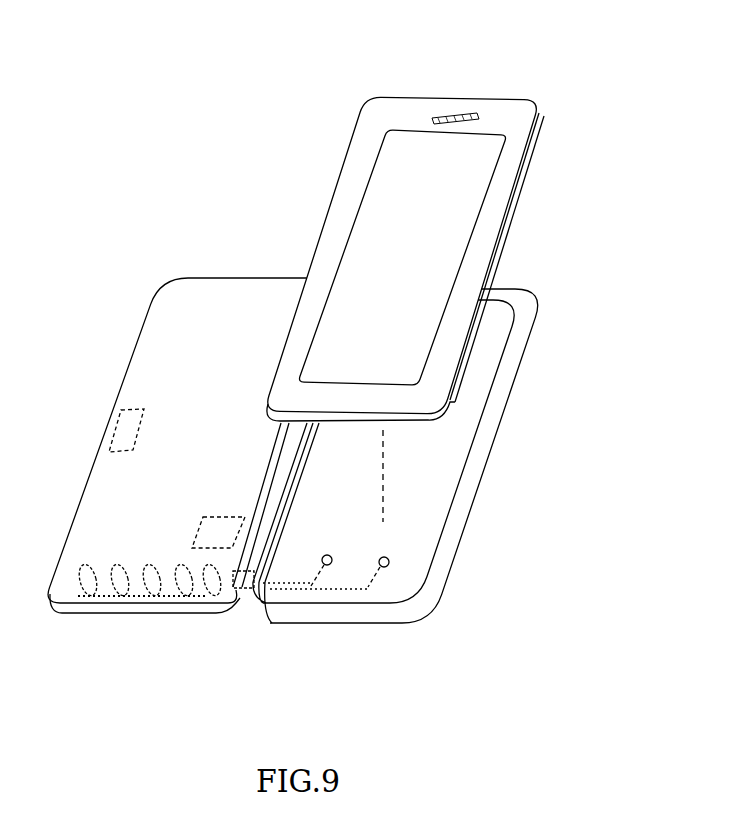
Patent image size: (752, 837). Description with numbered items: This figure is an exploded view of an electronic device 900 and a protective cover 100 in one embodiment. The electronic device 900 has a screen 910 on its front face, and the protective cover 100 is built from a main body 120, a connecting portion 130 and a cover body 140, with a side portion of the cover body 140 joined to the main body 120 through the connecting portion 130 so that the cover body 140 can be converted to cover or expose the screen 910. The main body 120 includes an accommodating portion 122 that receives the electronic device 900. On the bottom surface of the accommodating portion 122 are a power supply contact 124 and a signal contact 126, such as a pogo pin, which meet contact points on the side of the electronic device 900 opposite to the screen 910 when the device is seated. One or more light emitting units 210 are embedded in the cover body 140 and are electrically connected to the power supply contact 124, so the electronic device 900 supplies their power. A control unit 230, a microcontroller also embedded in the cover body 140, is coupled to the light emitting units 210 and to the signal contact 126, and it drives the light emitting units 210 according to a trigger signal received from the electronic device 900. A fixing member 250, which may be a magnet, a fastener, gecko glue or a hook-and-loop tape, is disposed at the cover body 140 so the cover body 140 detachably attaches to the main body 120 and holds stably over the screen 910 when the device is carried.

The protective cover 100 is at (176, 128).
The electronic device 900 is at (513, 103).
The screen 910 is at (398, 157).
The cover body 140 is at (205, 290).
The fixing member 250 is at (128, 406).
The light emitting unit 210 is at (92, 560).
The control unit 230 is at (222, 514).
The connecting portion 130 is at (243, 590).
The main body 120 is at (383, 617).
The accommodating portion 122 is at (421, 468).
The power supply contact 124 is at (333, 559).
The signal contact 126 is at (390, 562).